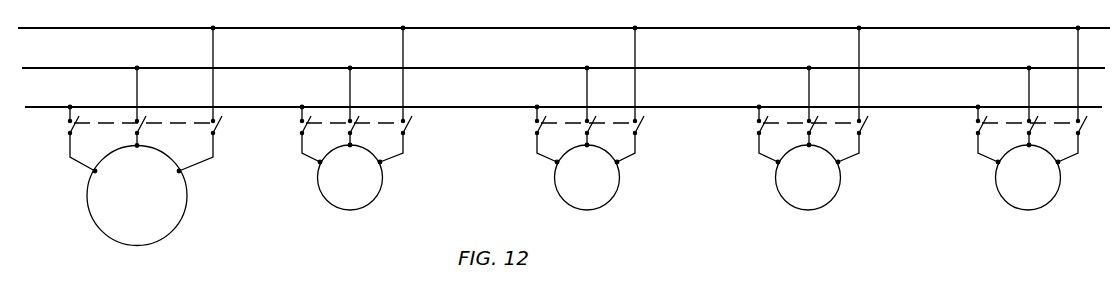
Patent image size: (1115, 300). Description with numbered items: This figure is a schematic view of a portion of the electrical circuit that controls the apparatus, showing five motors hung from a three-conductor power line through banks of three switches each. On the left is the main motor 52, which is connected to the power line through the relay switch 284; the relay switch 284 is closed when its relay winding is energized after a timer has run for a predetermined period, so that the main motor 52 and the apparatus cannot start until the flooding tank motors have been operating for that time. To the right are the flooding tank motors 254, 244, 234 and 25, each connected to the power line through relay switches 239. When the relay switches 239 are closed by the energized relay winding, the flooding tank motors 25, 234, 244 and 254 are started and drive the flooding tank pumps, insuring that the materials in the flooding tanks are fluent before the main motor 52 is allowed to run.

The main motor 52 is at (180, 220).
The relay switch 284 is at (219, 143).
The relay switch 239 is at (411, 141).
The flooding tank motor 254 is at (343, 210).
The flooding tank motor 244 is at (602, 202).
The flooding tank motor 234 is at (812, 210).
The flooding tank motor 25 is at (1045, 203).